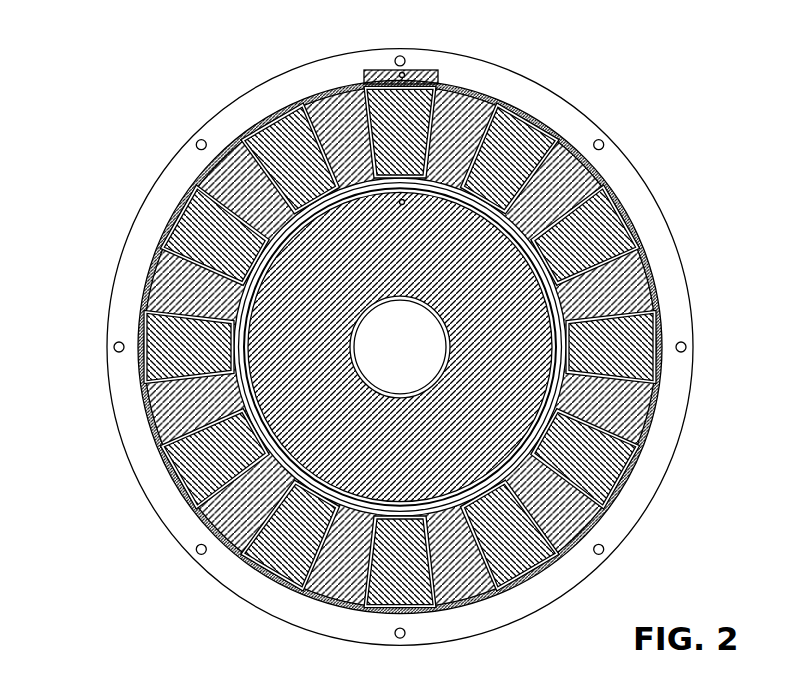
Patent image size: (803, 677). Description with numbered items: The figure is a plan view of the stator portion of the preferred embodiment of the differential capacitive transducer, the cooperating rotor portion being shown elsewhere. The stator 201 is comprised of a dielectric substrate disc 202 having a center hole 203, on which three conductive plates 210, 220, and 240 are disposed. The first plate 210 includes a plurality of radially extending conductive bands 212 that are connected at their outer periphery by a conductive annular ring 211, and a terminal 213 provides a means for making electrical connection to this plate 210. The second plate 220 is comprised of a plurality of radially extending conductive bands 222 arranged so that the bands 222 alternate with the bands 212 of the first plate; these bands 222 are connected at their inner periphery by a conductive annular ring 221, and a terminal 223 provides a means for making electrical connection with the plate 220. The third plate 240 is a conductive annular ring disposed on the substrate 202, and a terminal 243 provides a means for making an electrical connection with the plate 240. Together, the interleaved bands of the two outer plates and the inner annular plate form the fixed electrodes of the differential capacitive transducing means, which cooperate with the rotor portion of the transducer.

The stator 201 is at (635, 163).
The dielectric substrate disc 202 is at (226, 119).
The center hole 203 is at (413, 331).
The conductive plate 210 is at (647, 292).
The conductive annular ring 211 is at (150, 330).
The radially extending conductive bands 212 is at (334, 104).
The terminal 213 is at (407, 75).
The conductive plate 220 is at (612, 241).
The conductive annular ring 221 is at (248, 207).
The radially extending conductive bands 222 is at (190, 228).
The terminal 223 is at (440, 80).
The conductive annular ring plate 240 is at (305, 437).
The terminal 243 is at (406, 200).